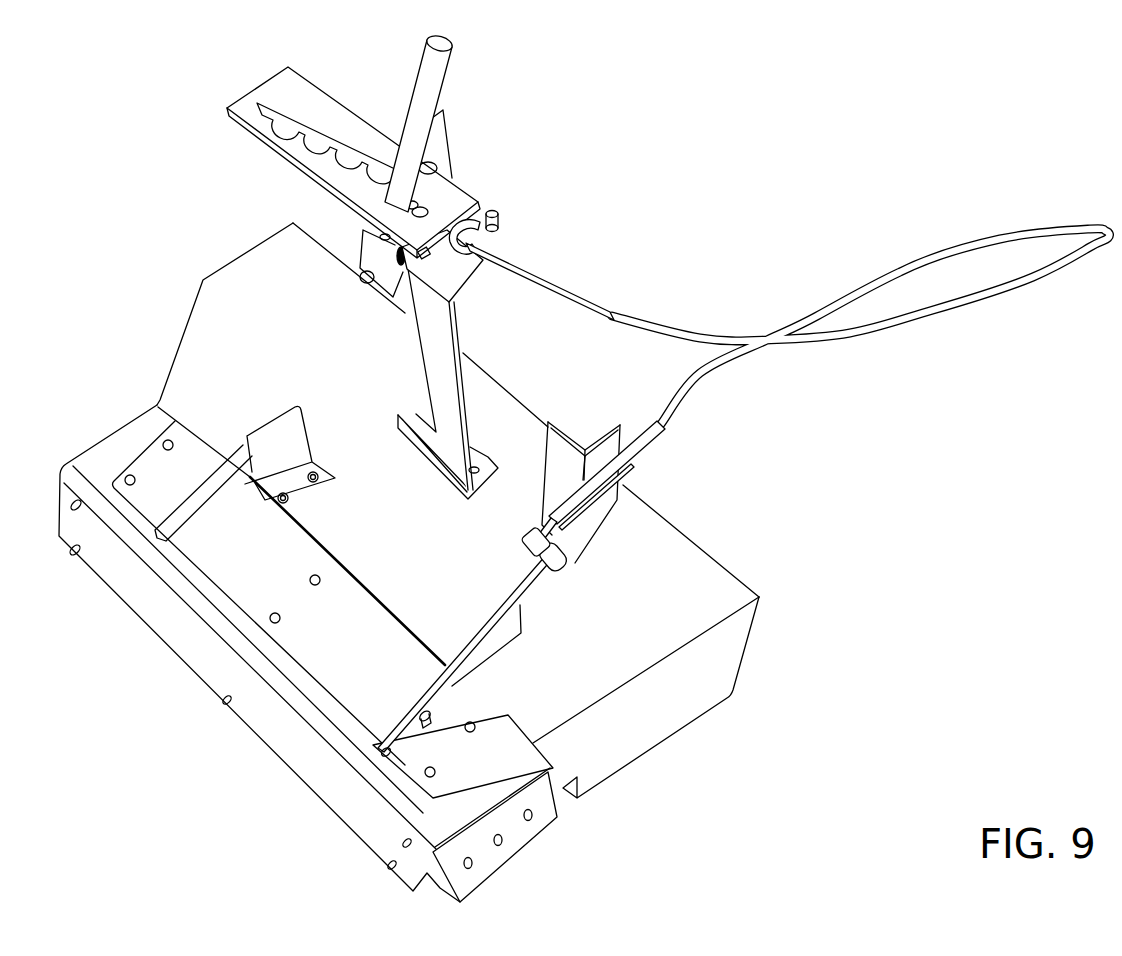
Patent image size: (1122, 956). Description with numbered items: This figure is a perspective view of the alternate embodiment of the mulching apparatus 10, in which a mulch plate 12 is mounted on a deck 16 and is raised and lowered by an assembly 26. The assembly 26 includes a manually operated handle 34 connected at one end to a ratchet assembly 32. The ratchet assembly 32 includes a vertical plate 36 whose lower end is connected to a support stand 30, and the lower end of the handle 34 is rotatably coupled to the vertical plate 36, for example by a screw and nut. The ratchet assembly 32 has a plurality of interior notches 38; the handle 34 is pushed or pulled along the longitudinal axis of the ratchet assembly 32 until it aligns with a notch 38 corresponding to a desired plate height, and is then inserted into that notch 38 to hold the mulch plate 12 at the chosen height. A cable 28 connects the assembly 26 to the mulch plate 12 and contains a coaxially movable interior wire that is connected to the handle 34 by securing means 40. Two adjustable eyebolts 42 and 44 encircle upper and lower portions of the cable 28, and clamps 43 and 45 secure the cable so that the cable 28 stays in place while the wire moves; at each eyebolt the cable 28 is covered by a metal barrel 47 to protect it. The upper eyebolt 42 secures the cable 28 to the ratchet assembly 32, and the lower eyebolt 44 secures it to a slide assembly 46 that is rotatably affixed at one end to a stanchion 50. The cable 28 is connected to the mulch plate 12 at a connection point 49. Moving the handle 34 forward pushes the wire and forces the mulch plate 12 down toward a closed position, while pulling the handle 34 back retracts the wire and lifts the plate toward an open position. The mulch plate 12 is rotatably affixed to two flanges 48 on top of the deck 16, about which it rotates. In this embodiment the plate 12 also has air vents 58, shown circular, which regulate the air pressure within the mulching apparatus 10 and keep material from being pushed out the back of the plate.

The mulching apparatus 10 is at (119, 200).
The mulch plate 12 is at (158, 617).
The deck 16 is at (738, 587).
The assembly 26 is at (743, 493).
The cable 28 is at (1058, 280).
The support stand 30 is at (437, 372).
The ratchet assembly 32 is at (349, 152).
The handle 34 is at (448, 67).
The vertical plate 36 is at (465, 290).
The interior notches 38 is at (315, 108).
The securing means 40 is at (413, 207).
The eyebolt 42 is at (457, 278).
The clamp 43 is at (498, 230).
The eyebolt 44 is at (567, 570).
The clamp 45 is at (526, 534).
The slide assembly 46 is at (627, 447).
The metal barrel 47 is at (585, 403).
The flanges 48 is at (268, 433).
The connection point 49 is at (423, 727).
The stanchion 50 is at (572, 425).
The air vents 58 is at (530, 818).